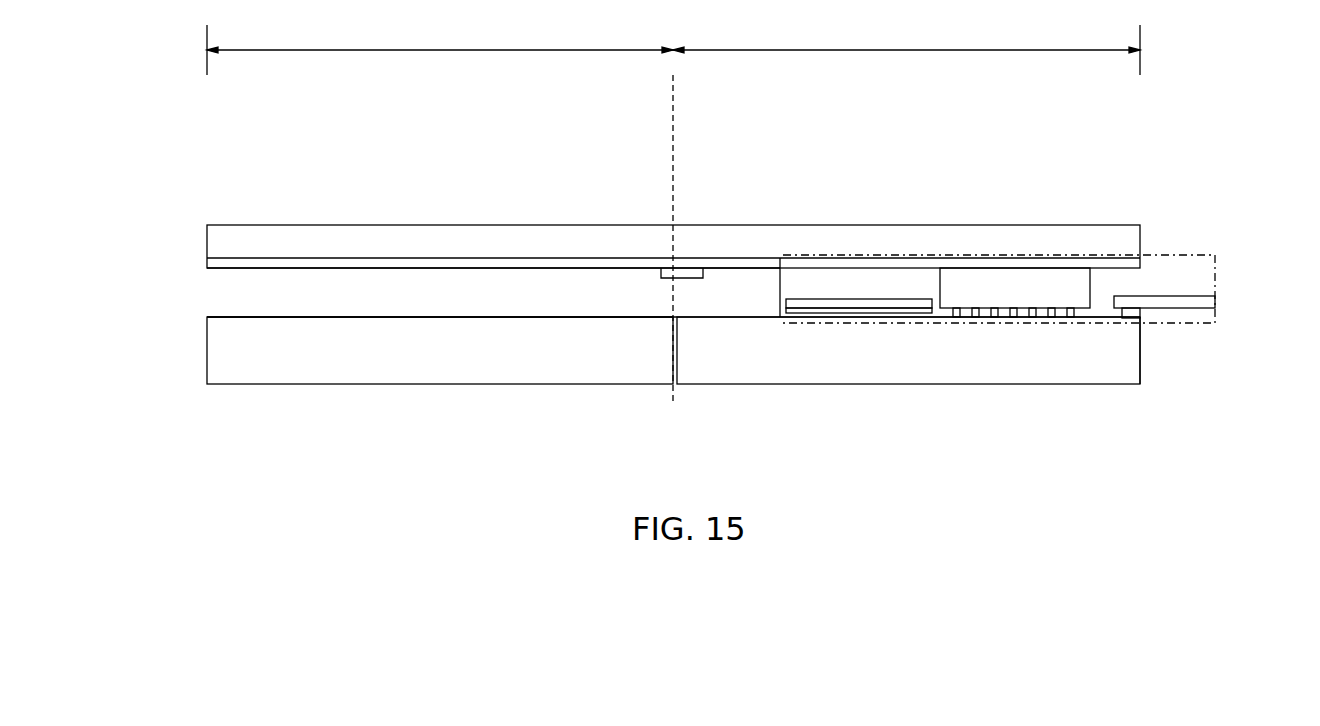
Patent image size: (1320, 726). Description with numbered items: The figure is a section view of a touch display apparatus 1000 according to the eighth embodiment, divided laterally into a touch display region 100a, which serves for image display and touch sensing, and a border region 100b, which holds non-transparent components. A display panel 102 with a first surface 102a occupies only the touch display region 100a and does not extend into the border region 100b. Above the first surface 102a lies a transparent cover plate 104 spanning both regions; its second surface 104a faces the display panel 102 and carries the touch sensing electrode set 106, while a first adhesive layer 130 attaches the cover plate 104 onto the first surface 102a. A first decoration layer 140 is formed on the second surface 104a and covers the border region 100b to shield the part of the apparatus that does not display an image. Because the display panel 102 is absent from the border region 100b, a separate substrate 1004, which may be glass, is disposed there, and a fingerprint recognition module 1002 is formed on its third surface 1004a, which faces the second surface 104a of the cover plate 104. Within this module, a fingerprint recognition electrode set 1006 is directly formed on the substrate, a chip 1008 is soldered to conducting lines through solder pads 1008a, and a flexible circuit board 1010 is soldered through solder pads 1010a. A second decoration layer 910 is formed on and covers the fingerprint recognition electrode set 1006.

The touch display region 100a is at (440, 49).
The border region 100b is at (906, 49).
The touch display apparatus 1000 is at (1127, 180).
The cover plate 104 is at (1130, 233).
The touch sensing electrode set 106 is at (207, 262).
The second surface 104a is at (262, 258).
The first adhesive layer 130 is at (548, 303).
The first decoration layer 140 is at (1140, 268).
The first surface 102a is at (245, 317).
The display panel 102 is at (650, 363).
The substrate 1004 is at (932, 363).
The fingerprint recognition module 1002 is at (1245, 271).
The second decoration layer 910 is at (840, 300).
The fingerprint recognition electrode set 1006 is at (895, 310).
The chip 1008 is at (1010, 292).
The solder pads 1008a is at (1100, 318).
The third surface 1004a is at (1102, 315).
The flexible circuit board 1010 is at (1186, 309).
The solder pads 1010a is at (1140, 318).